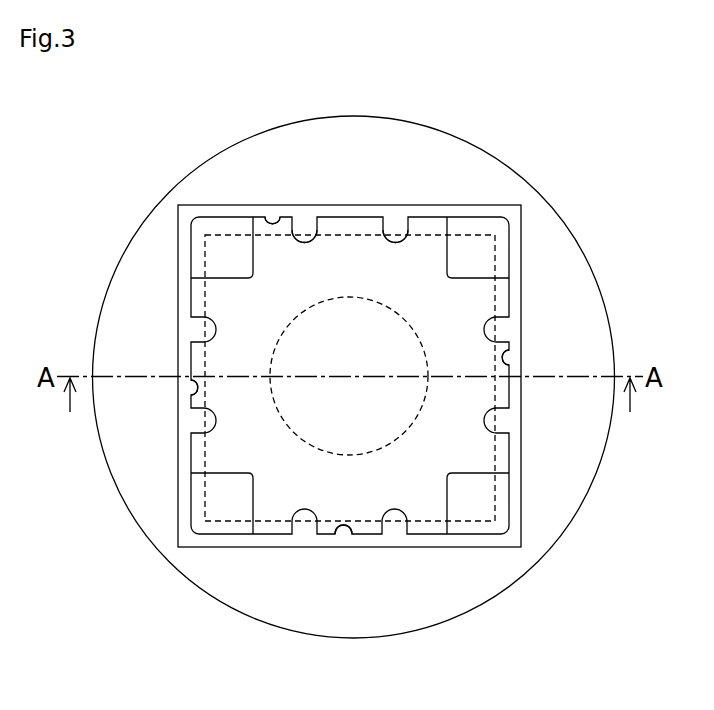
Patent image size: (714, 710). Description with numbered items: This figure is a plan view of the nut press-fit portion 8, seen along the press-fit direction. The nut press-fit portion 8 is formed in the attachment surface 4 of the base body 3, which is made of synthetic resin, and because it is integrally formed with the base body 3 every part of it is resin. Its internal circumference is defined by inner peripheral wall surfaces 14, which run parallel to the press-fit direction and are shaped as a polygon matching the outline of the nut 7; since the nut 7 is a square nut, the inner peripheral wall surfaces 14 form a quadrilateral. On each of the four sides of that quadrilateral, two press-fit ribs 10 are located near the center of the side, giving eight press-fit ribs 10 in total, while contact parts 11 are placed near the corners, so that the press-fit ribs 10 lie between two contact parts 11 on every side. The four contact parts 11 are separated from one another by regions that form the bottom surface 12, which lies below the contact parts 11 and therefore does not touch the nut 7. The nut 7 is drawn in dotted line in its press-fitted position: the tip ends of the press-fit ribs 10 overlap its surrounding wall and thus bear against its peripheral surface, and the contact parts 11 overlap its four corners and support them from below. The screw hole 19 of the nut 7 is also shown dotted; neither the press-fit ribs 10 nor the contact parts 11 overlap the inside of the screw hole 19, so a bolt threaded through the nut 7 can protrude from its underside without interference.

The base body 3 is at (260, 130).
The attachment surface 4 is at (460, 143).
The nut 7 is at (178, 362).
The nut press-fit portion 8 is at (353, 218).
The press-fit ribs 10 is at (396, 242).
The contact parts 11 is at (200, 250).
The bottom surface 12 is at (413, 472).
The inner peripheral wall surfaces 14 is at (276, 218).
The screw hole 19 is at (406, 298).